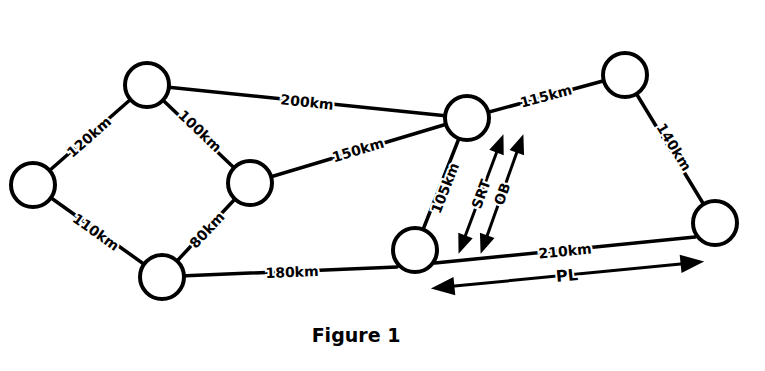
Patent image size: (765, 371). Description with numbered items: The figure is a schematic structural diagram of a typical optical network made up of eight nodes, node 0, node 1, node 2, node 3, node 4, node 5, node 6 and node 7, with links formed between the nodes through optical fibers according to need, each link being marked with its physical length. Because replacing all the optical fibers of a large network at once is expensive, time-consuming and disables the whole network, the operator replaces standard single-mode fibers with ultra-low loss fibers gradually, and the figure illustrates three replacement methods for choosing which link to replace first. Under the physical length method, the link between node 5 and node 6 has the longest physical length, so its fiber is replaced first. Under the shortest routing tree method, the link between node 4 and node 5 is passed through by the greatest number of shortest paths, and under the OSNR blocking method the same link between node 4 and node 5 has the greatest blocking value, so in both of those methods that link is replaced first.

The node 0 is at (162, 277).
The node 1 is at (33, 185).
The node 2 is at (147, 85).
The node 3 is at (250, 183).
The node 4 is at (467, 118).
The node 5 is at (415, 250).
The node 6 is at (715, 223).
The node 7 is at (625, 75).